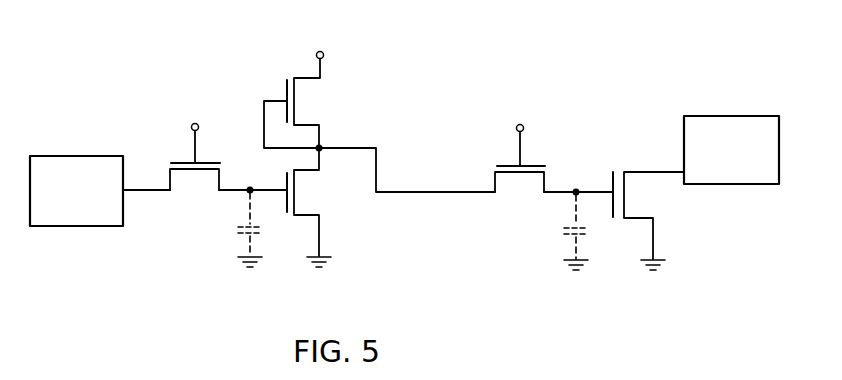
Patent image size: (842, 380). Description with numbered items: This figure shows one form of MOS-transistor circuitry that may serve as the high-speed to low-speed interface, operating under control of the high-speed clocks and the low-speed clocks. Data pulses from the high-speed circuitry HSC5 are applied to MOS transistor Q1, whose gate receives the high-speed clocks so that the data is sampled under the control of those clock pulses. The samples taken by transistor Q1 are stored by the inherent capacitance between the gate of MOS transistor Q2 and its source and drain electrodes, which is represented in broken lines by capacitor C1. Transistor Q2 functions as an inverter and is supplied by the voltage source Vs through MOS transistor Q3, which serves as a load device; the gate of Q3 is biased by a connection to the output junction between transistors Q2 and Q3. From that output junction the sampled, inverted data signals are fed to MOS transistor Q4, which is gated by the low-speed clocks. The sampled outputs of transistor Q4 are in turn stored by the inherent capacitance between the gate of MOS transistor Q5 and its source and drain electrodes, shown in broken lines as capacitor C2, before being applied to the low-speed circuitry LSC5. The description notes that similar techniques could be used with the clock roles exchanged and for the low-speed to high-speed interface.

The high-speed circuitry HSC5 is at (76, 191).
The low-speed circuitry LSC5 is at (731, 150).
The MOS transistor Q1 is at (193, 178).
The MOS transistor Q2 is at (292, 207).
The MOS transistor Q3 is at (305, 100).
The MOS transistor Q4 is at (520, 182).
The MOS transistor Q5 is at (648, 203).
The capacitor C1 is at (264, 230).
The capacitor C2 is at (591, 232).
The voltage source Vs is at (339, 61).